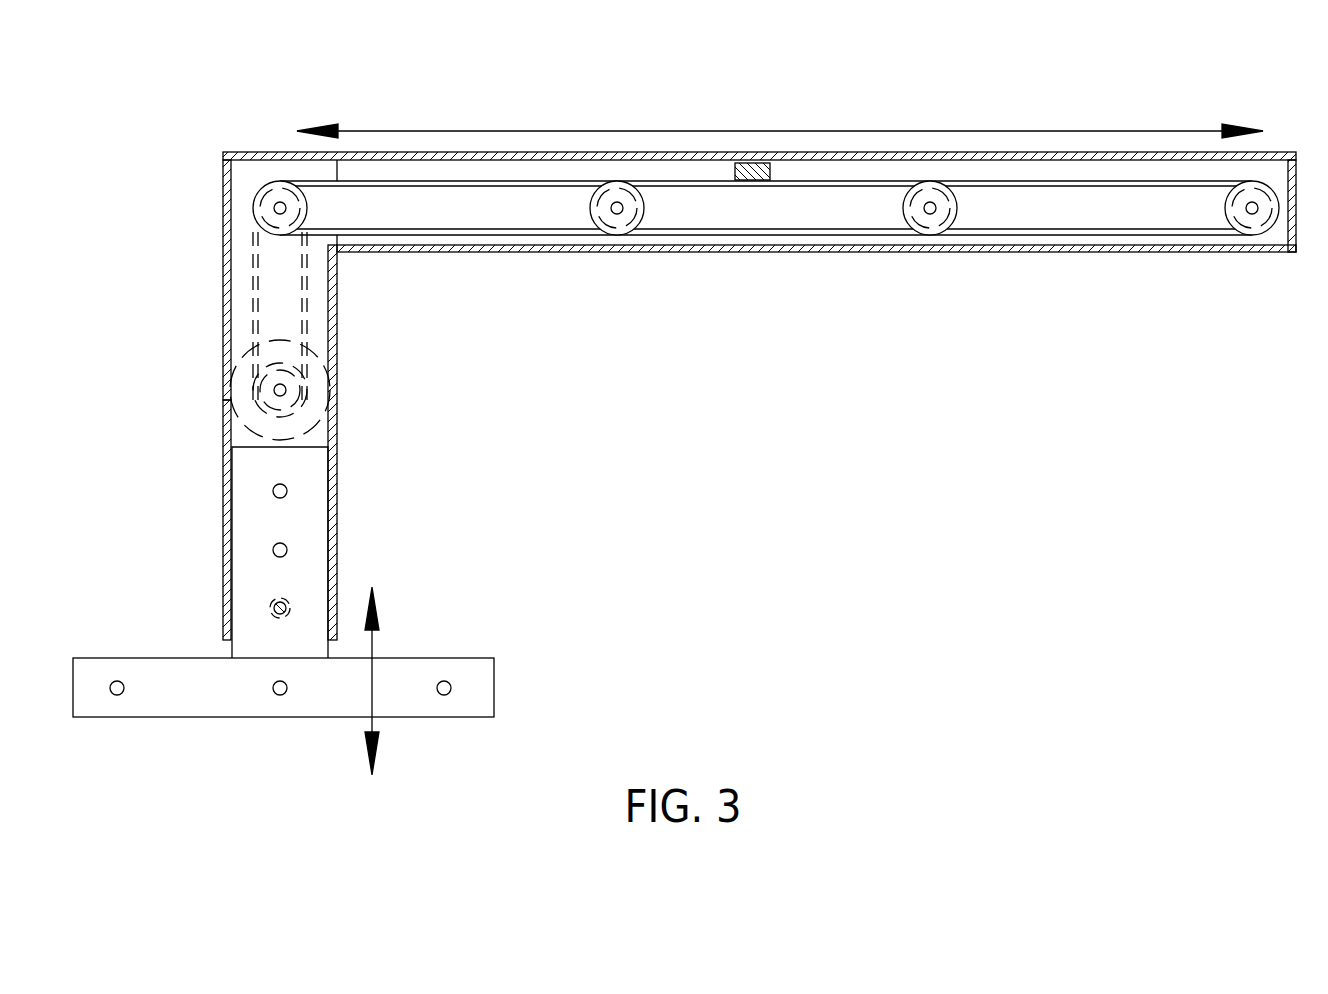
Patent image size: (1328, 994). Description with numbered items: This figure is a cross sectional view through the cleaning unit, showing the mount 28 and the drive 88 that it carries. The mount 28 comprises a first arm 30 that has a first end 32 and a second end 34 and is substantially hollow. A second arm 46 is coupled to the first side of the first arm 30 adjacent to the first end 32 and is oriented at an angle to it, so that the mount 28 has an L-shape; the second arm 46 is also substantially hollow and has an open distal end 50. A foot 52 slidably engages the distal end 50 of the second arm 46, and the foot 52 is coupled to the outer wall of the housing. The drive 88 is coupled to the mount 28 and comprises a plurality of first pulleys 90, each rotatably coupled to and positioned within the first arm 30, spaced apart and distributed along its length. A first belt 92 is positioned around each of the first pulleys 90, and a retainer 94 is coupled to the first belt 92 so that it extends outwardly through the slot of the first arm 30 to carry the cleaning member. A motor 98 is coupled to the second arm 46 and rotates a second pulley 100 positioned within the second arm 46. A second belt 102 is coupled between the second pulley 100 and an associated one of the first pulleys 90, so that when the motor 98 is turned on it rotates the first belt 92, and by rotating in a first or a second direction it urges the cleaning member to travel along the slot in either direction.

The mount 28 is at (240, 128).
The first arm 30 is at (476, 152).
The first end 32 is at (223, 185).
The second end 34 is at (1297, 178).
The second arm 46 is at (337, 487).
The distal end 50 is at (223, 640).
The foot 52 is at (296, 718).
The drive 88 is at (238, 256).
The first pulleys 90 is at (298, 220).
The first belt 92 is at (763, 235).
The retainer 94 is at (750, 163).
The motor 98 is at (312, 362).
The second pulley 100 is at (273, 388).
The second belt 102 is at (253, 288).